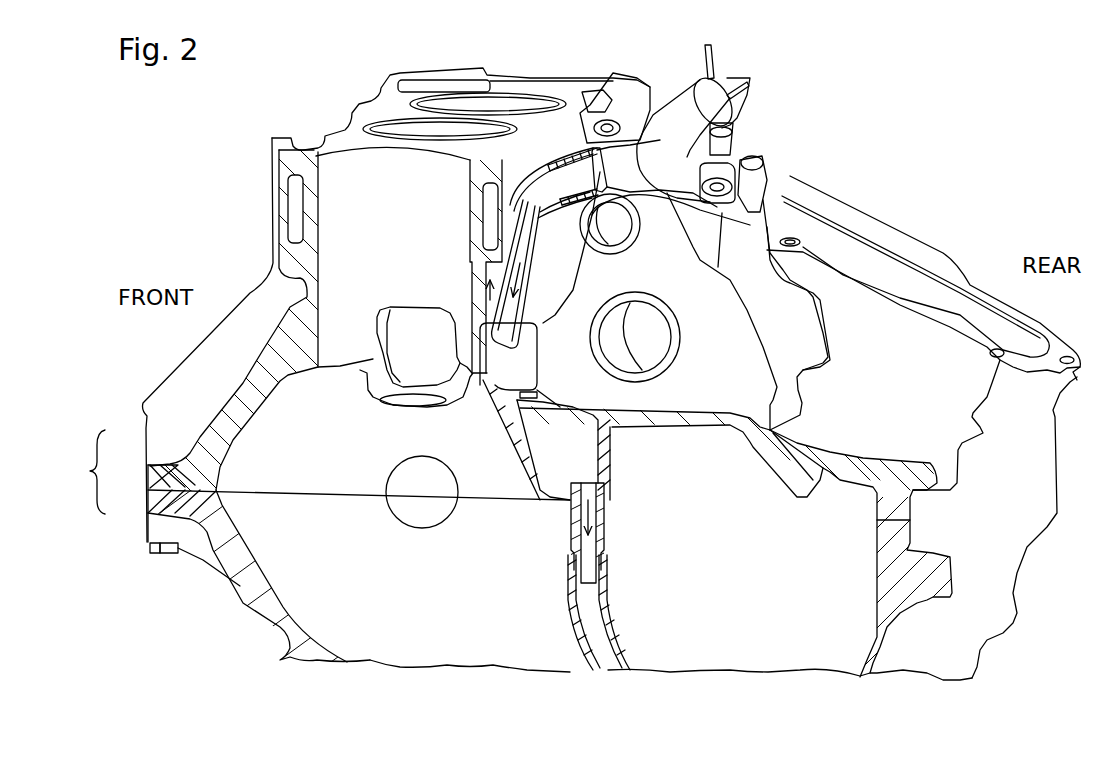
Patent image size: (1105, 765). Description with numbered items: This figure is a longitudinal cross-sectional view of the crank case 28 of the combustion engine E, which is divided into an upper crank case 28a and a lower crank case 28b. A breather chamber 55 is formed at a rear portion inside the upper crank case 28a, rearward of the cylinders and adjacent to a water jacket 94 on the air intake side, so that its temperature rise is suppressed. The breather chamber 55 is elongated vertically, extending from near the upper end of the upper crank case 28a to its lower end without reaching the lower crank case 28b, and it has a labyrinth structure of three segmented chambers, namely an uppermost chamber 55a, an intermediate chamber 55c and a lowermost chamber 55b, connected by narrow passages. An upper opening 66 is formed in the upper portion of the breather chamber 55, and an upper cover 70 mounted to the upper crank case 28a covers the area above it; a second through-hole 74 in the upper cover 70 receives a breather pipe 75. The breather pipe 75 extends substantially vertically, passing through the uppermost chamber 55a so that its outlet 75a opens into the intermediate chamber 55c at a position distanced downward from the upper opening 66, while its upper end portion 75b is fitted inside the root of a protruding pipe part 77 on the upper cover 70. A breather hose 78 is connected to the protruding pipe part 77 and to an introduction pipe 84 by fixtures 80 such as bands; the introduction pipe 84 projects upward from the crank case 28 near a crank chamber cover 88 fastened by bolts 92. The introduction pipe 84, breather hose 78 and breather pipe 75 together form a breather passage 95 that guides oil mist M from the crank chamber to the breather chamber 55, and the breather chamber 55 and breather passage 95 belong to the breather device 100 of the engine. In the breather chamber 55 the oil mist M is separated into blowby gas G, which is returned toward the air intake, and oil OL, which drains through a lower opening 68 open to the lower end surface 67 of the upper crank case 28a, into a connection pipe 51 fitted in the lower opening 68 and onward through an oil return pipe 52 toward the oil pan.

The combustion engine E is at (404, 63).
The water jacket 94 is at (300, 188).
The second through-hole 74 is at (527, 197).
The protruding pipe part 77 is at (555, 160).
The fixture 80 is at (581, 150).
The breather passage 95 is at (552, 134).
The bolts 92 is at (592, 108).
The crank chamber cover 88 is at (641, 97).
The breather hose 78 is at (677, 113).
The introduction pipe 84 is at (736, 120).
The breather device 100 is at (760, 82).
The upper cover 70 is at (788, 180).
The upper end portion 75b is at (484, 215).
The breather pipe 75 is at (512, 238).
The oil mist M is at (486, 267).
The blowby gas G is at (488, 295).
The uppermost chamber 55a is at (572, 286).
The upper opening 66 is at (580, 238).
The outlet 75a is at (497, 345).
The intermediate chamber 55c is at (540, 377).
The breather chamber 55 is at (566, 420).
The lowermost chamber 55b is at (572, 448).
The crank case 28 is at (88, 472).
The upper crank case 28a is at (157, 448).
The lower crank case 28b is at (157, 515).
The lower end surface 67 is at (480, 505).
The lower opening 68 is at (576, 503).
The oil OL is at (600, 503).
The connection pipe 51 is at (605, 537).
The oil return pipe 52 is at (621, 609).